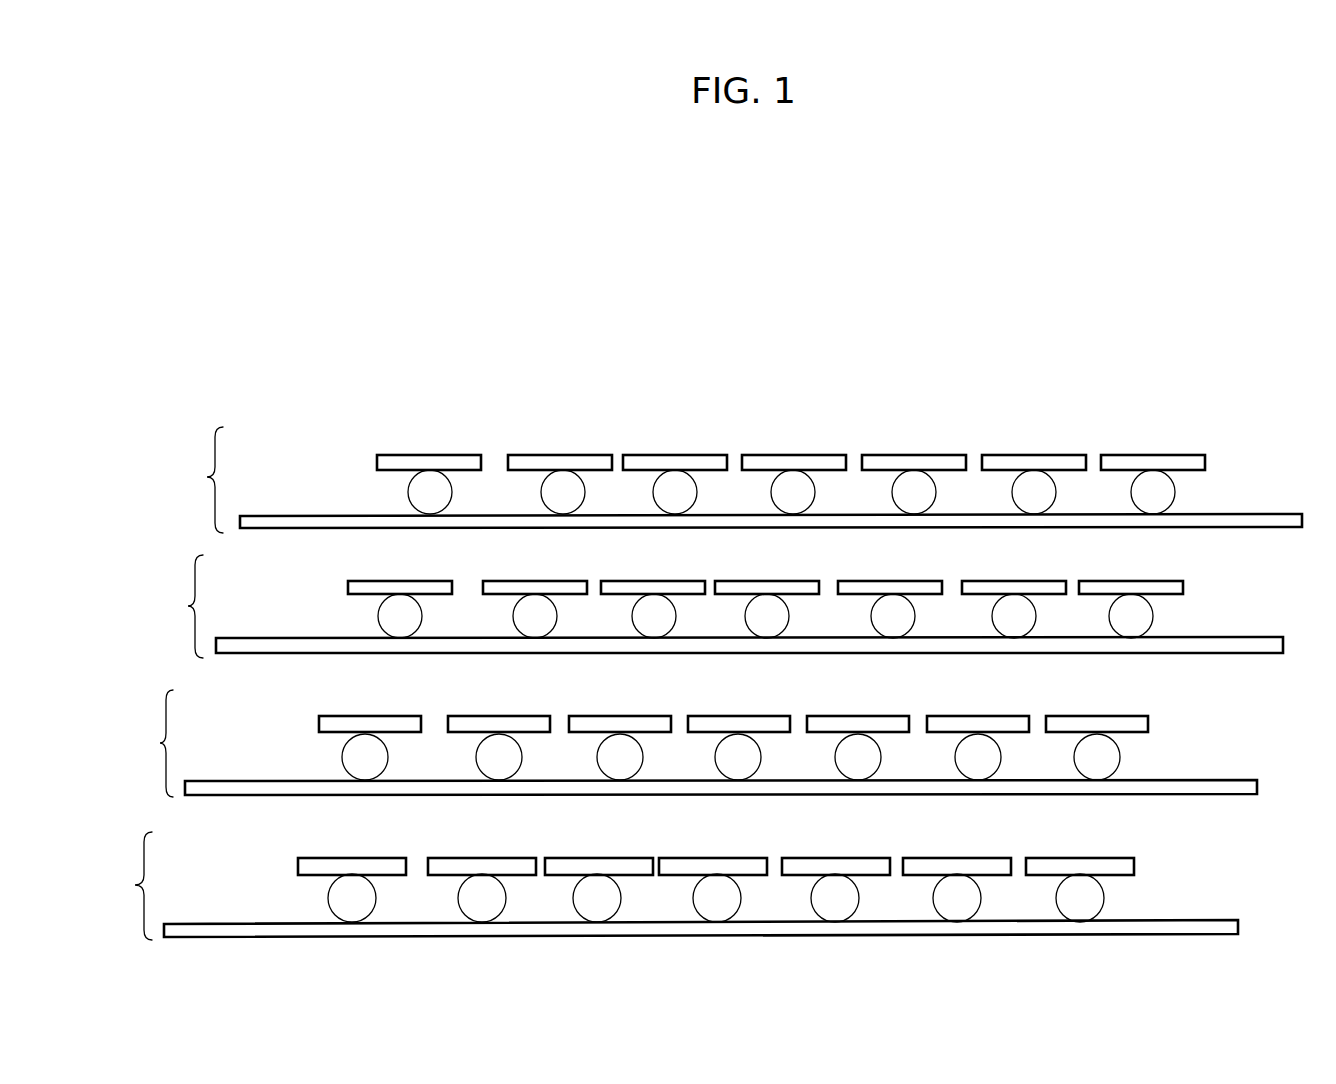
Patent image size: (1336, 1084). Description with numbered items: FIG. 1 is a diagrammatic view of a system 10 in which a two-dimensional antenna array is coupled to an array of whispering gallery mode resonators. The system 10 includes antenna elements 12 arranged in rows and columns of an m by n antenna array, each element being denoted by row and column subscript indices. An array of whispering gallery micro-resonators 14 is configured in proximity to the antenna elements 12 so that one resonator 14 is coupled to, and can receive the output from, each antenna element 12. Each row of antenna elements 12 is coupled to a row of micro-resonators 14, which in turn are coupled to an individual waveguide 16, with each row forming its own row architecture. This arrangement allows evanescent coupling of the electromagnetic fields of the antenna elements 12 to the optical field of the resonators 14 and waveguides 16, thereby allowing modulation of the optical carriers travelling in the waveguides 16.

The system 10 is at (1122, 295).
The antenna element 12 is at (1063, 853).
The whispering gallery micro-resonator 14 is at (309, 460).
The waveguide 16 is at (1232, 512).